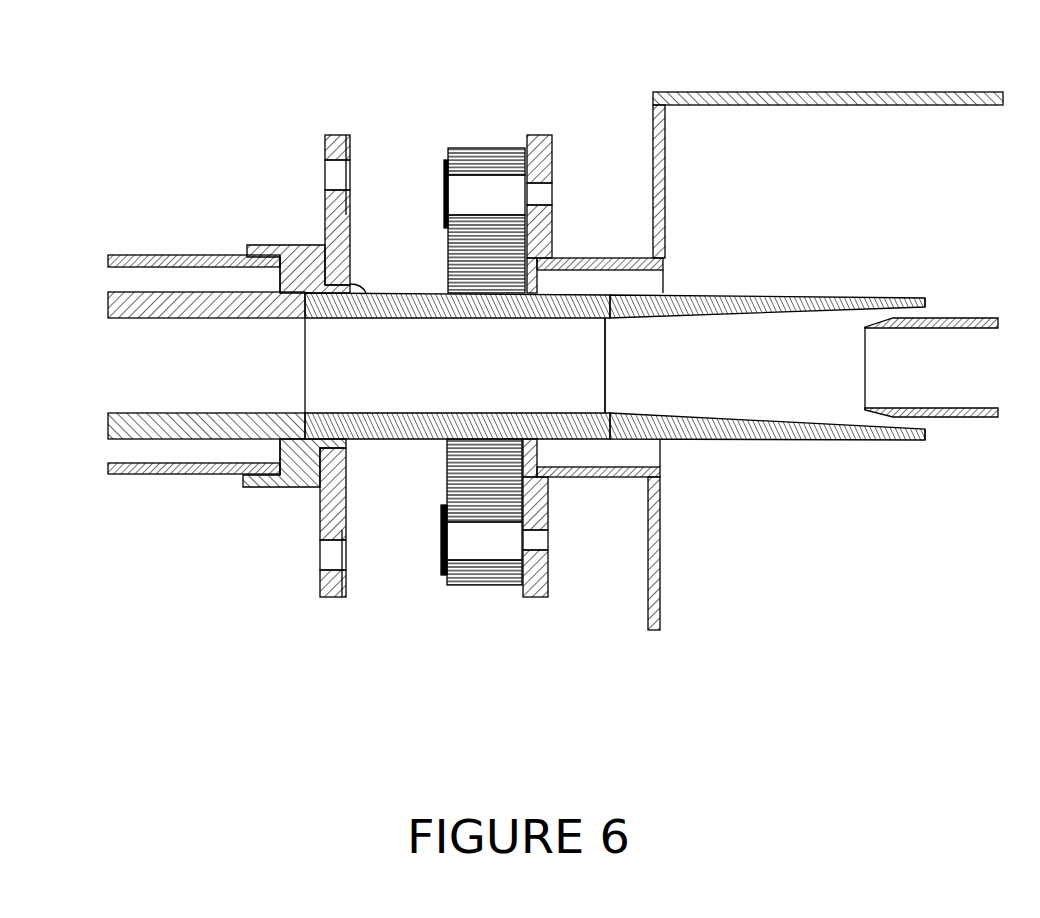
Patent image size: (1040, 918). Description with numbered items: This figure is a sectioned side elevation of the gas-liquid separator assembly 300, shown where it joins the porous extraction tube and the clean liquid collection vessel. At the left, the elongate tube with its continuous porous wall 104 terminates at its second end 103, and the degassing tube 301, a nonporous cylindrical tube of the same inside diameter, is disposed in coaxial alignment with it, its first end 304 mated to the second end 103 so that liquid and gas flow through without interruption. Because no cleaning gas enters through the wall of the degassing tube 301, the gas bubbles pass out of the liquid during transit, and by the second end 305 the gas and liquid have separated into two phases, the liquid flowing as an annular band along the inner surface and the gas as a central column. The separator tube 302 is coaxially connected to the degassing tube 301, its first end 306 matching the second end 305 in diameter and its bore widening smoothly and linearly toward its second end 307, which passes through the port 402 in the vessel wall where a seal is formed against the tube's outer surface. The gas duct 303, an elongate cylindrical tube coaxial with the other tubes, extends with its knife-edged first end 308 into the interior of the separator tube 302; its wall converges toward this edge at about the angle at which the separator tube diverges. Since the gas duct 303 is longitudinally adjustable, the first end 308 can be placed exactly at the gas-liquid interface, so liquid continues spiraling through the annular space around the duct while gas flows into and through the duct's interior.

The gas-liquid separator assembly 300 is at (738, 137).
The porous wall 104 is at (252, 305).
The second end 103 is at (302, 392).
The first end 304 is at (308, 352).
The degassing tube 301 is at (390, 390).
The separator tube 302 is at (762, 373).
The second end 305 is at (600, 375).
The first end 306 is at (607, 367).
The port 402 is at (587, 285).
The second end 307 is at (927, 302).
The gas duct 303 is at (940, 373).
The first end 308 is at (857, 390).